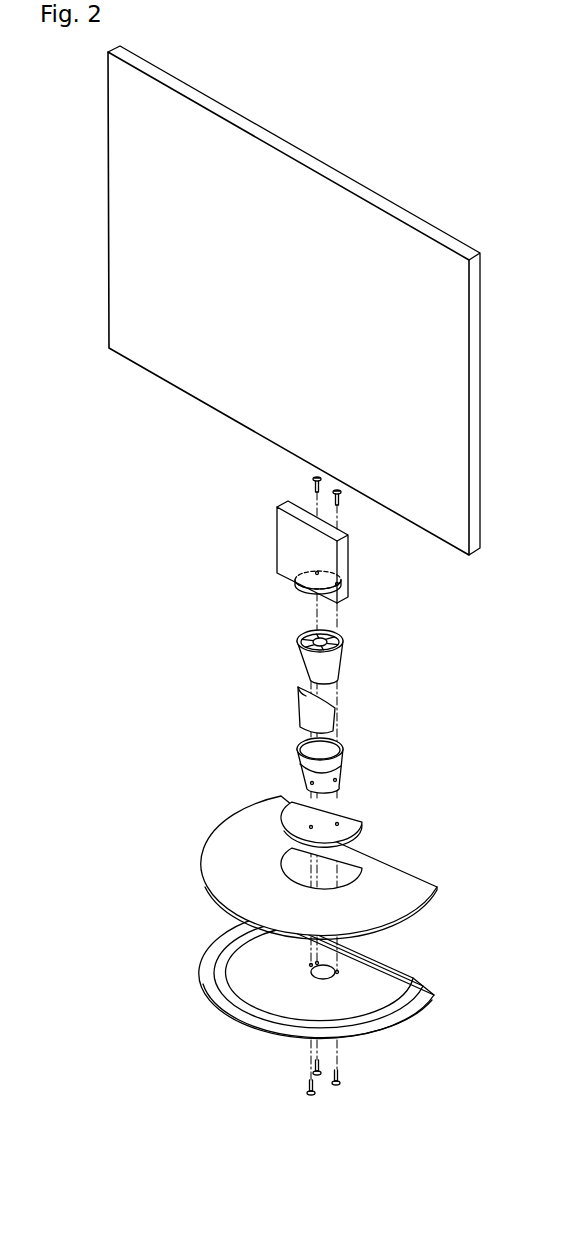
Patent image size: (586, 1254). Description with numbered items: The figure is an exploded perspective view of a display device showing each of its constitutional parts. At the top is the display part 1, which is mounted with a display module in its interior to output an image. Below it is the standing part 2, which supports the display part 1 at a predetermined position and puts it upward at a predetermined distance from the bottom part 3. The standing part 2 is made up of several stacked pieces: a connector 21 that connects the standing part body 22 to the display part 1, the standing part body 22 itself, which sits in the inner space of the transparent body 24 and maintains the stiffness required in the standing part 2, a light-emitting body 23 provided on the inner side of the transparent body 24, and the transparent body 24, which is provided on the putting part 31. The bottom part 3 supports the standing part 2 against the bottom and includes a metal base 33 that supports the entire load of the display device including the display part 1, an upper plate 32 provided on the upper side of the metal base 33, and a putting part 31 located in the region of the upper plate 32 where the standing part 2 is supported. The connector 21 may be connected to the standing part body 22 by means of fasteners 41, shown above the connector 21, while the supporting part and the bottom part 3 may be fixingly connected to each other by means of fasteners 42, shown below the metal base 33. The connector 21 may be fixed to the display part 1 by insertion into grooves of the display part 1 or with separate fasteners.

The display part 1 is at (121, 212).
The standing part 2 is at (357, 647).
The connector 21 is at (343, 562).
The standing part body 22 is at (338, 659).
The light-emitting body 23 is at (330, 714).
The transparent body 24 is at (352, 765).
The bottom part 3 is at (356, 917).
The putting part 31 is at (382, 824).
The upper plate 32 is at (438, 887).
The metal base 33 is at (438, 996).
The fasteners 41 is at (313, 483).
The fasteners 42 is at (342, 1082).